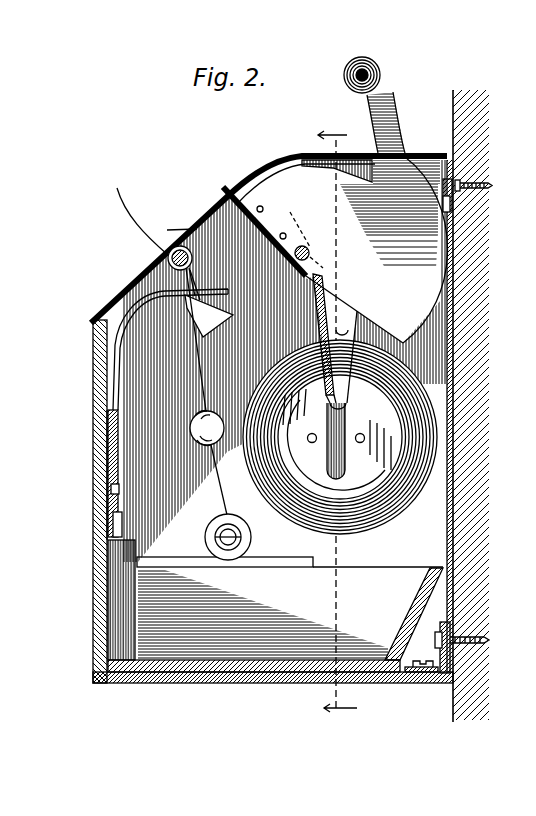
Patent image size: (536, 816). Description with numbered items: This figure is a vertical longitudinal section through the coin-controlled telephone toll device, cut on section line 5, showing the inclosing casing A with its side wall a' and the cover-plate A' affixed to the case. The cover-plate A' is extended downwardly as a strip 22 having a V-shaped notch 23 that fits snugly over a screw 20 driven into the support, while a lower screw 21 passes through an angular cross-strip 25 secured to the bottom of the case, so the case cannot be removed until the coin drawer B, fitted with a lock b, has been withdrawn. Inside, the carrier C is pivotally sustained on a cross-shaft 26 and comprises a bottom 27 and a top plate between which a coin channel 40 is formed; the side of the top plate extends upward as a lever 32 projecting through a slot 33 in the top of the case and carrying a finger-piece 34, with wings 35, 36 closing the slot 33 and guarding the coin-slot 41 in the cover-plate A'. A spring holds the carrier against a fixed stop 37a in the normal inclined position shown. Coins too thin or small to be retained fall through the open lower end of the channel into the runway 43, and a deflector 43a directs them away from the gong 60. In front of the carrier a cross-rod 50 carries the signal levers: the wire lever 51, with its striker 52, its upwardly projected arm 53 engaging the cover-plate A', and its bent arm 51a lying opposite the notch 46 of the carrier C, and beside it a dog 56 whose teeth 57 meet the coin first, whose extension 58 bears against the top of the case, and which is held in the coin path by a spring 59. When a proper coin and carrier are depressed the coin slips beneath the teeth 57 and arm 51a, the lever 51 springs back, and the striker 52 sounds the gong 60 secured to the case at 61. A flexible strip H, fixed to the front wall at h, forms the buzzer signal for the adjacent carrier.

The screw 20 is at (446, 184).
The screw 21 is at (475, 636).
The downwardly extended portion of cover-plate 22 is at (443, 180).
The V-shaped notch 23 is at (452, 205).
The angular cross-strip 25 is at (423, 678).
The cross-shaft 26 is at (308, 249).
The carrier bottom 27 is at (266, 230).
The lever 32 is at (381, 122).
The slot 33 is at (269, 227).
The finger-piece 34 is at (378, 77).
The wing 35 is at (262, 185).
The wing 36 is at (377, 250).
The fixed stop 37a is at (263, 172).
The coin channel 40 is at (290, 222).
The coin-slot 41 is at (228, 196).
The runway 43 is at (345, 419).
The deflector 43a is at (341, 312).
The notch 46 is at (250, 194).
The cross-rod 50 is at (172, 252).
The lever 51 is at (200, 375).
The arm 51a is at (209, 316).
The striker 52 is at (205, 430).
The arm 53 is at (173, 233).
The dog 56 is at (152, 276).
The teeth 57 is at (199, 292).
The upward extension of dog 58 is at (133, 221).
The spring 59 is at (160, 281).
The gong 60 is at (408, 500).
The gong attachment 61 is at (246, 542).
The section line 5 is at (337, 423).
The inclosing casing A is at (87, 475).
The cover-plate A' is at (285, 362).
The coin receptacle or drawer B is at (379, 595).
The carrier C is at (290, 237).
The flexible strip H is at (118, 343).
The strip attachment h is at (108, 500).
The lock b is at (108, 548).
The side wall a' is at (408, 553).